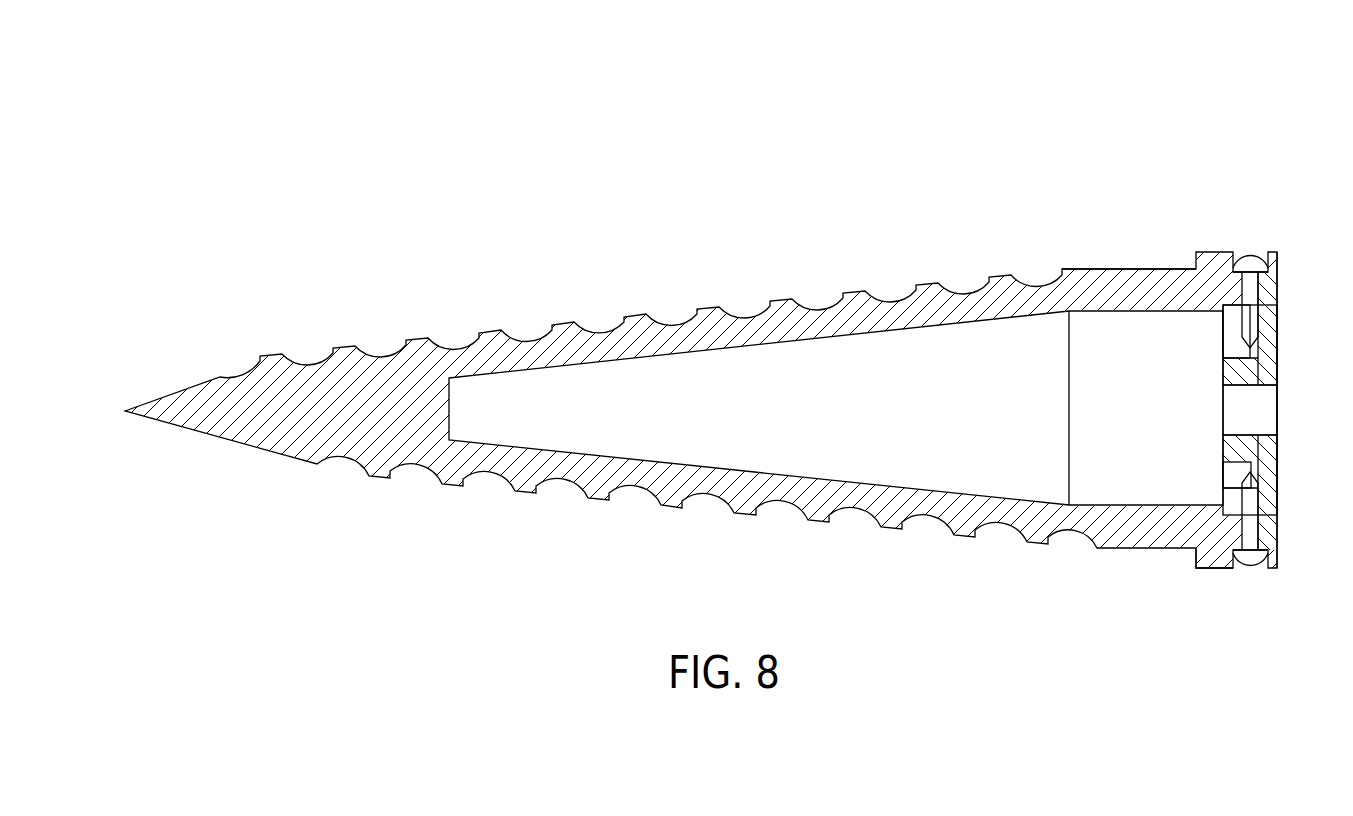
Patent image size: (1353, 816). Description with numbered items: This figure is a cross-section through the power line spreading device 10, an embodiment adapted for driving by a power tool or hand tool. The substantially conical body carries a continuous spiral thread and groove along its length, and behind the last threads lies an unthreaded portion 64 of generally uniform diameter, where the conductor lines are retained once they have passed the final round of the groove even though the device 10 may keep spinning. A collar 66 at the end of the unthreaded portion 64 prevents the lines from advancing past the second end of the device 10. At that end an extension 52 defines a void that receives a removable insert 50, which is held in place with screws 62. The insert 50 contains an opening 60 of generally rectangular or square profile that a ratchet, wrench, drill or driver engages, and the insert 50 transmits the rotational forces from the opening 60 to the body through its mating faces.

The power line spreading device 10 is at (988, 138).
The removable insert 50 is at (1280, 327).
The extension 52 is at (1240, 250).
The opening 60 is at (1270, 407).
The screws 62 is at (1243, 318).
The unthreaded portion 64 is at (1134, 268).
The collar 66 is at (1213, 569).